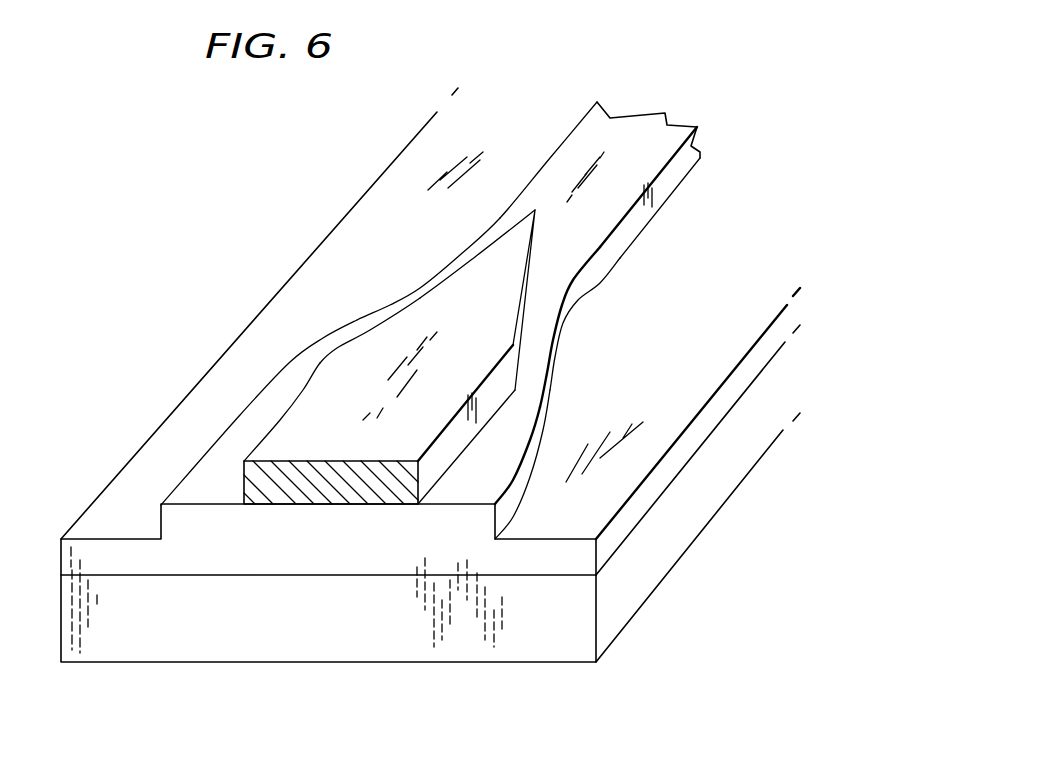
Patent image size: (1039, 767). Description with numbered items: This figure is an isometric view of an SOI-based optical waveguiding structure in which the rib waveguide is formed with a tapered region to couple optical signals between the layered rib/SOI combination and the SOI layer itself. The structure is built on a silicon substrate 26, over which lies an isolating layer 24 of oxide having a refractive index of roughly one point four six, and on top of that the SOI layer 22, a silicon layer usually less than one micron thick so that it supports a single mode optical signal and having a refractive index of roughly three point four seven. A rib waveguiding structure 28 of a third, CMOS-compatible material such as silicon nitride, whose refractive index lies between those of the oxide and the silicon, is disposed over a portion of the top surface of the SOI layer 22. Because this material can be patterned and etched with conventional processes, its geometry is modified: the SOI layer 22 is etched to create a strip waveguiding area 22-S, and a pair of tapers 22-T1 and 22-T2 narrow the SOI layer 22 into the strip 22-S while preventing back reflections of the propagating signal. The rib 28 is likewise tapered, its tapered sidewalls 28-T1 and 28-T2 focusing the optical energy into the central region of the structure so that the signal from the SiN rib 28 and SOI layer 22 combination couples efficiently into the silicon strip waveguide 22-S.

The SOI layer 22 is at (203, 472).
The strip waveguiding area 22-S is at (584, 136).
The taper 22-T1 is at (439, 273).
The taper 22-T2 is at (557, 357).
The isolating layer 24 is at (108, 517).
The silicon substrate 26 is at (668, 545).
The rib waveguiding structure 28 is at (317, 410).
The tapered sidewall 28-T1 is at (370, 334).
The tapered sidewall 28-T2 is at (533, 281).